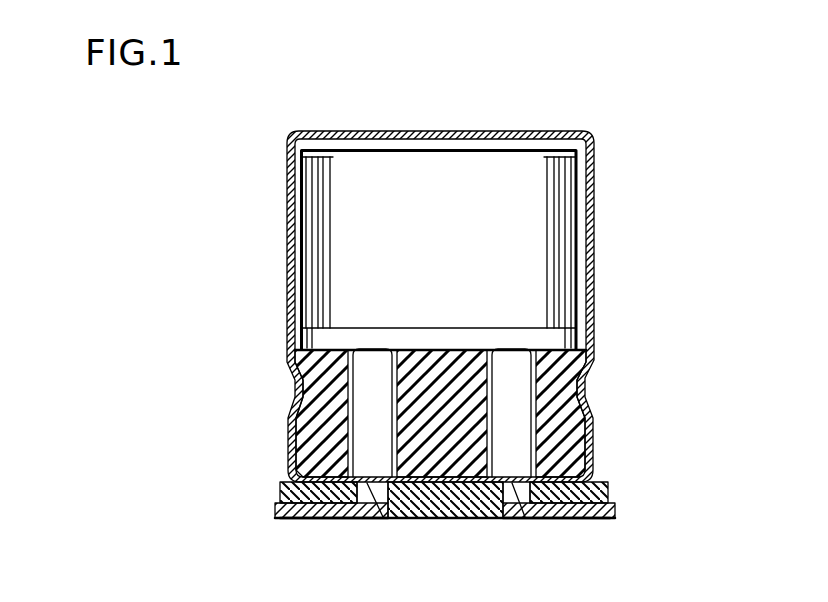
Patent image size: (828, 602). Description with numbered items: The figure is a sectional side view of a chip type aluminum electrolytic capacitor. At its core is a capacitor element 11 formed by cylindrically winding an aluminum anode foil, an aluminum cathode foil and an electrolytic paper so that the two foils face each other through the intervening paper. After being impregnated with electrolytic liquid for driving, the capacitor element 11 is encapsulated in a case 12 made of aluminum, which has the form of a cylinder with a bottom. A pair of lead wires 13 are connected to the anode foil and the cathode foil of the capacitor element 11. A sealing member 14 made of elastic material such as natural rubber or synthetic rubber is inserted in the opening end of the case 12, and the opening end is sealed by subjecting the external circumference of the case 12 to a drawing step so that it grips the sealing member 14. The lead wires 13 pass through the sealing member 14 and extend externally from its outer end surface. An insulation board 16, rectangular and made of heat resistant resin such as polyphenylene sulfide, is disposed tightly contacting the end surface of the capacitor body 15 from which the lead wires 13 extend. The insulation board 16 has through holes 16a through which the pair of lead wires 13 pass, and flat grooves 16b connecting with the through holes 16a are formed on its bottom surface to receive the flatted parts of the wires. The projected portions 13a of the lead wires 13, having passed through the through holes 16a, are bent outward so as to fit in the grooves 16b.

The capacitor element 11 is at (338, 188).
The case 12 is at (288, 240).
The lead wires 13 is at (363, 387).
The projected portions of the lead wires 13a is at (320, 520).
The sealing member 14 is at (315, 452).
The capacitor body 15 is at (597, 244).
The insulation board 16 is at (455, 518).
The through holes 16a is at (377, 520).
The flat grooves 16b is at (282, 497).